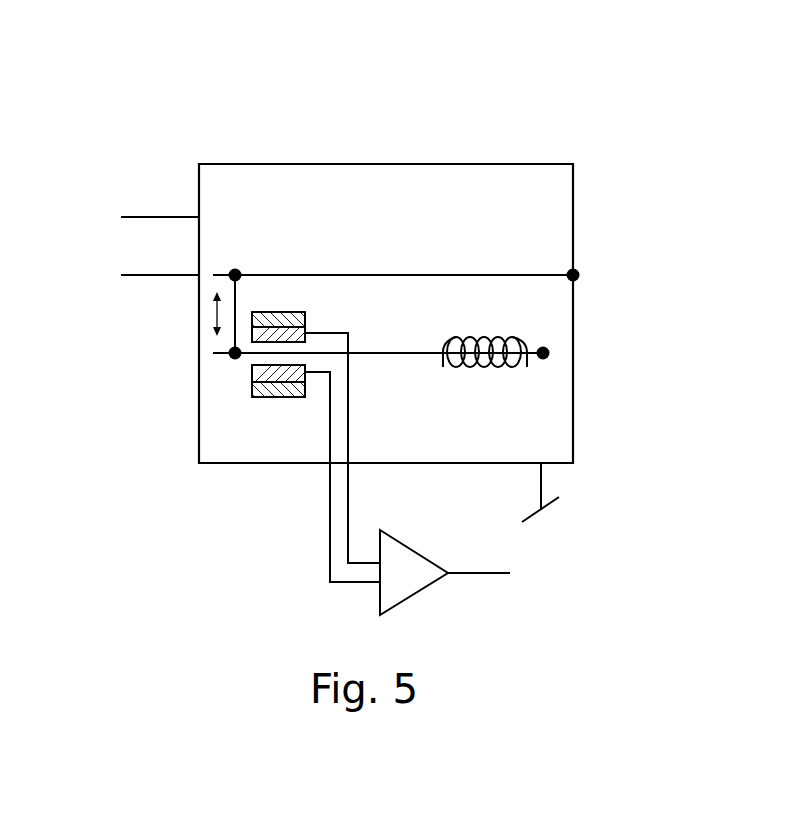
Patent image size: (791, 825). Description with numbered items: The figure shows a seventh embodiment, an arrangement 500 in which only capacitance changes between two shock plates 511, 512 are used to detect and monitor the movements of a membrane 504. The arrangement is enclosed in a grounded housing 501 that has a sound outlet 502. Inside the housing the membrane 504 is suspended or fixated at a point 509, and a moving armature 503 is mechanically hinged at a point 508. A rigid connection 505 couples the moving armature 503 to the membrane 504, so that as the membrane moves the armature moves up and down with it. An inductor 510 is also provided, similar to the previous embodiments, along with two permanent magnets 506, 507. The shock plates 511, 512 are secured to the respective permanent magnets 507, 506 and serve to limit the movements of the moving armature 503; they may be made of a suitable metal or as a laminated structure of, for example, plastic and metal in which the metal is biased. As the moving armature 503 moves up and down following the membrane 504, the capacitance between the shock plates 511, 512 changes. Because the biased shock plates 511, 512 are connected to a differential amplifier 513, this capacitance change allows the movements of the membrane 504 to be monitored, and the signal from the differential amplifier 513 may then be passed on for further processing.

The sensor arrangement 500 is at (212, 72).
The grounded housing 501 is at (573, 215).
The sound outlet 502 is at (133, 241).
The moving armature 503 is at (425, 356).
The membrane 504 is at (405, 273).
The rigid connection 505 is at (233, 352).
The permanent magnet 506 is at (252, 388).
The permanent magnet 507 is at (280, 312).
The hinge point 508 is at (549, 353).
The suspension point 509 is at (573, 273).
The inductor 510 is at (480, 336).
The shock plate 511 is at (252, 328).
The shock plate 512 is at (252, 372).
The differential amplifier 513 is at (412, 582).